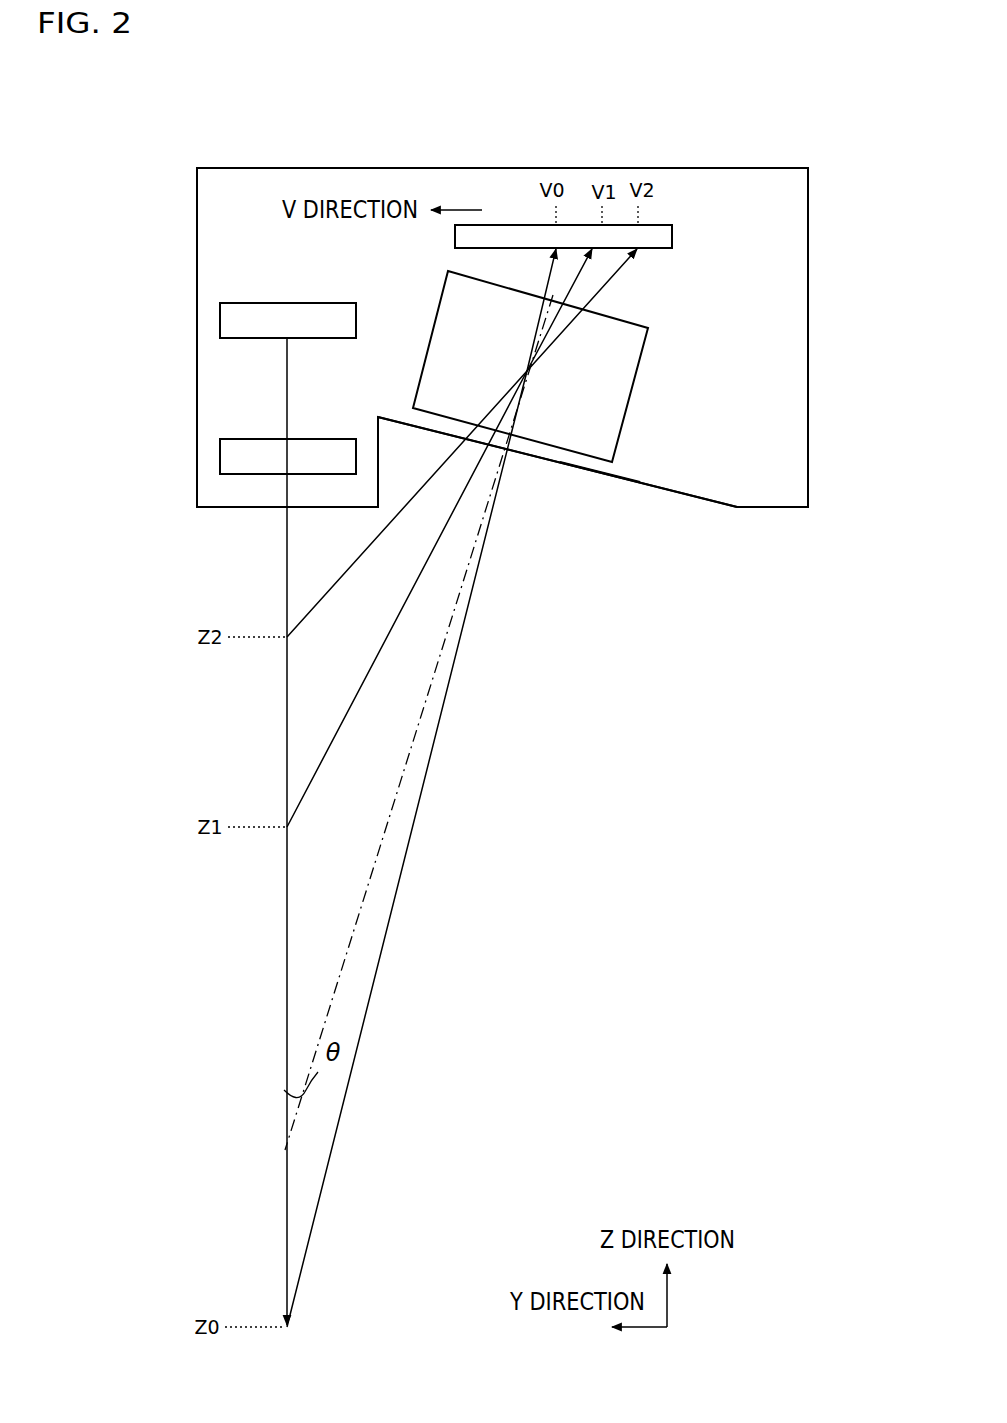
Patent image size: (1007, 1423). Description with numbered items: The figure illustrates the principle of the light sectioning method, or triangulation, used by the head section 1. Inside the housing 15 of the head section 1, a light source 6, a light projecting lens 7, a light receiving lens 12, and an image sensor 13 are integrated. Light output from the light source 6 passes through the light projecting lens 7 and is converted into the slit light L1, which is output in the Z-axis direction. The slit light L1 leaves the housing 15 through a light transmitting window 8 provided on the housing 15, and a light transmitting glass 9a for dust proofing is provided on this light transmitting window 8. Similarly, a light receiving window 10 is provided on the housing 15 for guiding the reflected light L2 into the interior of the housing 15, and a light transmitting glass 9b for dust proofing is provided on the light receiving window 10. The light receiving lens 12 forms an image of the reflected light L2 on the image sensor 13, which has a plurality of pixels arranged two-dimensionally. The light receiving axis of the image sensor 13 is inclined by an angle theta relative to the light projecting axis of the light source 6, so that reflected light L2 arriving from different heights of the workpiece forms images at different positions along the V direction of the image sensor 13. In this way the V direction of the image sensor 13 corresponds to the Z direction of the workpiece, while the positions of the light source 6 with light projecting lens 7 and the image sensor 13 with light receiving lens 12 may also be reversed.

The head section 1 is at (682, 127).
The light source 6 is at (220, 323).
The light projecting lens 7 is at (220, 457).
The light transmitting window 8 is at (228, 507).
The light transmitting glass 9a is at (243, 507).
The light transmitting glass 9b is at (643, 483).
The light receiving window 10 is at (600, 474).
The light receiving lens 12 is at (623, 379).
The image sensor 13 is at (667, 232).
The housing 15 is at (197, 225).
The slit light L1 is at (287, 528).
The reflected light L2 is at (438, 717).